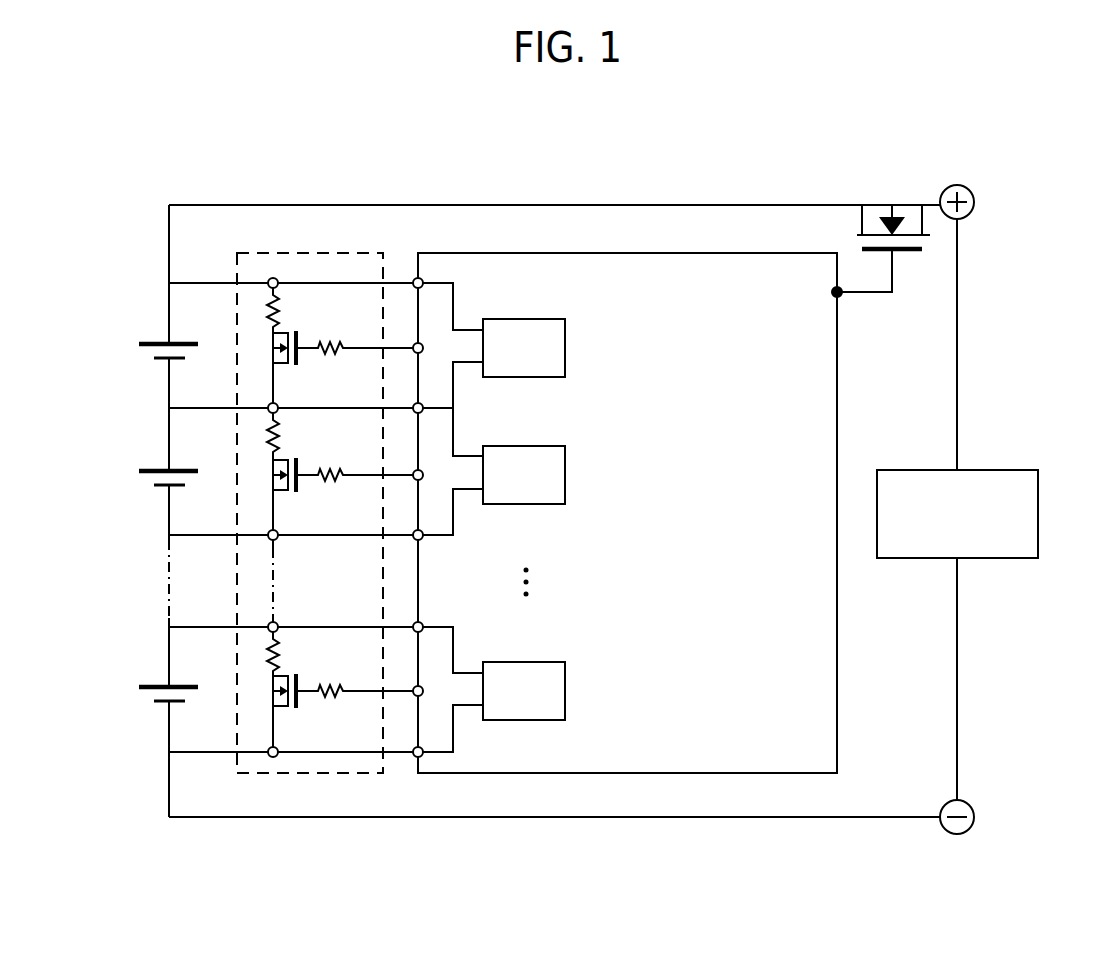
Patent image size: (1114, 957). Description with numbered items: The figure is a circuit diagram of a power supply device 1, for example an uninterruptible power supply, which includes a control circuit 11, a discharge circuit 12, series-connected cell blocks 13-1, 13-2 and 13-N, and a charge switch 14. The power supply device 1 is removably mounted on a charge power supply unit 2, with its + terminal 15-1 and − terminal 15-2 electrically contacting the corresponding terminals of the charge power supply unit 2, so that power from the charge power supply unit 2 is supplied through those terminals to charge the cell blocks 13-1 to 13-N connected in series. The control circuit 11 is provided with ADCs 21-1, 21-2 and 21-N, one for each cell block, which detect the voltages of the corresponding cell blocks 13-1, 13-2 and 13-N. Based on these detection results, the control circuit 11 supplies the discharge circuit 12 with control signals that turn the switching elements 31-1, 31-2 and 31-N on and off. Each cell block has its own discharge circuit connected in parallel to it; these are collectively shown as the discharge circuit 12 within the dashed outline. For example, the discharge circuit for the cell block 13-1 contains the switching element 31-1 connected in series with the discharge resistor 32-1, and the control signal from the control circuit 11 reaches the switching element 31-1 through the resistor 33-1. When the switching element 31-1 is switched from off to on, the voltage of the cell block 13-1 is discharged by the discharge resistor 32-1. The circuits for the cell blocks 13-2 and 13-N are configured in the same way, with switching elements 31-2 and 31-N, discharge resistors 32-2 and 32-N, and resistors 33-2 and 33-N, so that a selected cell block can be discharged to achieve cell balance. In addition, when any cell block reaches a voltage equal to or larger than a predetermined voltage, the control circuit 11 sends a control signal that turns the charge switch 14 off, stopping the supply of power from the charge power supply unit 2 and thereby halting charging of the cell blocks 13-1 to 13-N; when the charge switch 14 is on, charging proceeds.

The power supply device 1 is at (584, 168).
The charge power supply unit 2 is at (1040, 497).
The control circuit 11 is at (730, 252).
The discharge circuit 12 is at (284, 252).
The cell block 13-1 is at (152, 354).
The cell block 13-2 is at (152, 481).
The cell block 13-N is at (152, 697).
The charge switch 14 is at (920, 240).
The + terminal 15-1 is at (975, 202).
The − terminal 15-2 is at (975, 817).
The ADC 21-1 is at (566, 348).
The ADC 21-2 is at (566, 475).
The ADC 21-N is at (566, 691).
The switching element 31-1 is at (283, 365).
The switching element 31-2 is at (283, 492).
The switching element 31-N is at (283, 708).
The discharge resistor 32-1 is at (268, 313).
The discharge resistor 32-2 is at (268, 440).
The discharge resistor 32-N is at (268, 656).
The resistor 33-1 is at (334, 339).
The resistor 33-2 is at (334, 466).
The resistor 33-N is at (334, 682).